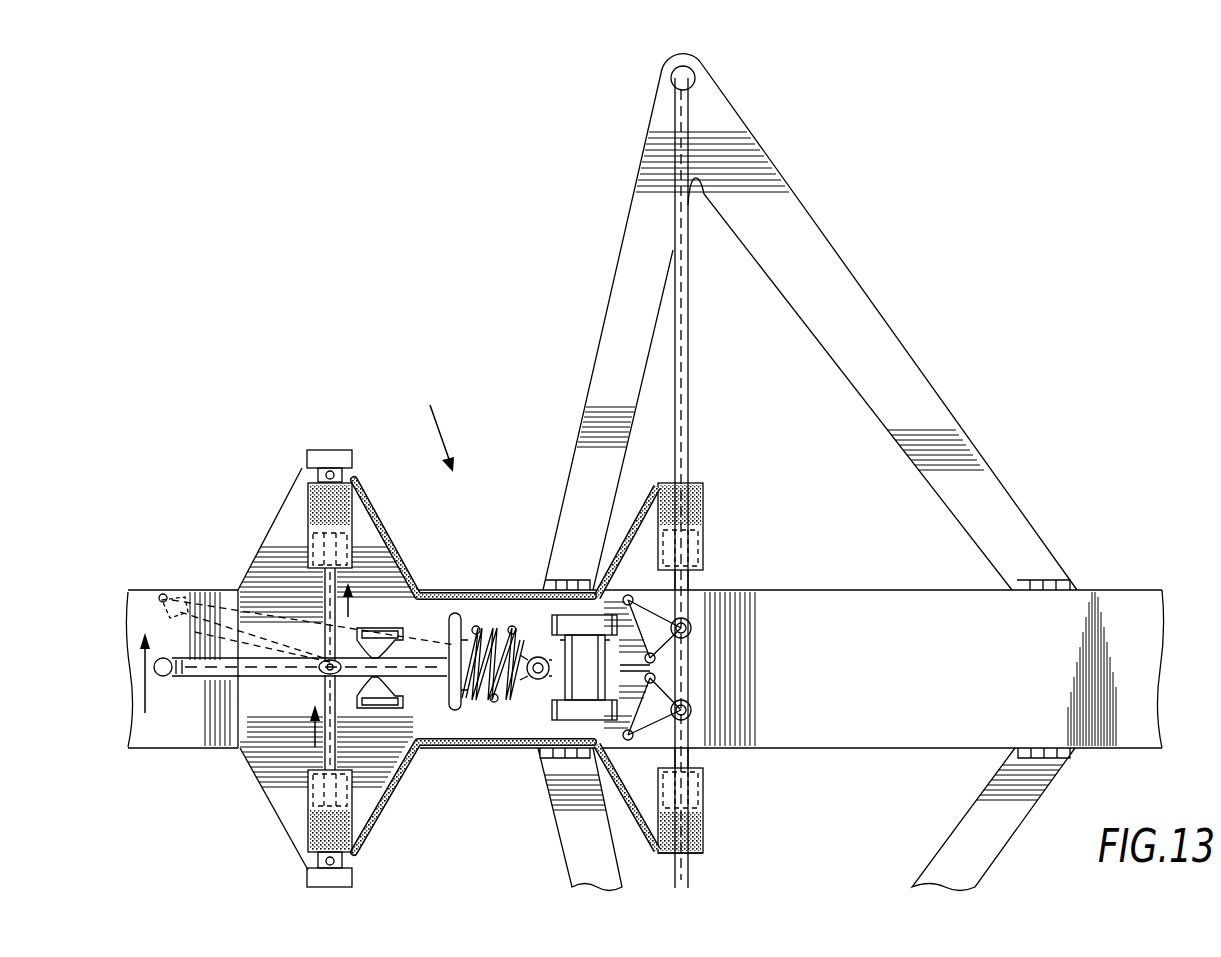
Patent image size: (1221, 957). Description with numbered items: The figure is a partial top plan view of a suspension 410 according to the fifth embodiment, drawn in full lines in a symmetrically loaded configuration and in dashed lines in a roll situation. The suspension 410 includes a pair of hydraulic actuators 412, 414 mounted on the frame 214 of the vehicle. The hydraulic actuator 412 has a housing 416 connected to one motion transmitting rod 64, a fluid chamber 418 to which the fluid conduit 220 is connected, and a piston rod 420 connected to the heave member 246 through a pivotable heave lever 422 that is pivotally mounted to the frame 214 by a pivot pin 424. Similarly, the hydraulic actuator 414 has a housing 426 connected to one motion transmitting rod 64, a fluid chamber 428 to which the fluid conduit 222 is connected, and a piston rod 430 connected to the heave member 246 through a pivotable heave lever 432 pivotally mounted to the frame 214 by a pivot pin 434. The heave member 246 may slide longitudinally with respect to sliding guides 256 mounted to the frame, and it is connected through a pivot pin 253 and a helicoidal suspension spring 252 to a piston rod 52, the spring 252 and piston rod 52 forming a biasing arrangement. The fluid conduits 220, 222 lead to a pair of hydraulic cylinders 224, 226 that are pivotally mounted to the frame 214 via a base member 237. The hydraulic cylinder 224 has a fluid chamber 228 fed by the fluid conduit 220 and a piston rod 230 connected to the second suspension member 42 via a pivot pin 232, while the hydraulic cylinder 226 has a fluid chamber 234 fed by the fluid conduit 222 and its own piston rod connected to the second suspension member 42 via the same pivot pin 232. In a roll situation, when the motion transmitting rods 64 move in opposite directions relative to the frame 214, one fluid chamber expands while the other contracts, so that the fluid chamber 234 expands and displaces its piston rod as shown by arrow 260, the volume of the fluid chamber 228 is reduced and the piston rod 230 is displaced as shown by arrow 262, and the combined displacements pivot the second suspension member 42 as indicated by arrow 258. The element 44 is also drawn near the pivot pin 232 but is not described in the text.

The suspension 410 is at (438, 424).
The frame 214 is at (915, 622).
The motion transmitting rod 64 is at (686, 372).
The fluid chamber 418 is at (690, 488).
The housing 416 is at (705, 500).
The hydraulic actuator 412 is at (706, 518).
The piston rod 420 is at (690, 582).
The pivot pin 424 is at (631, 598).
The pivotable heave lever 422 is at (661, 640).
The heave member 246 is at (655, 668).
The pivotable heave lever 432 is at (663, 700).
The piston rod 430 is at (690, 755).
The hydraulic actuator 414 is at (708, 802).
The fluid chamber 428 is at (705, 835).
The housing 426 is at (705, 848).
The pivot pin 434 is at (613, 780).
The fluid chamber 228 is at (305, 480).
The base member 237 is at (282, 552).
The hydraulic cylinder 224 is at (356, 533).
The fluid conduit 220 is at (462, 594).
The fluid conduit 222 is at (390, 795).
The piston rod 230 is at (324, 608).
The pivot pin 232 is at (324, 682).
The arrow 262 is at (360, 626).
The lower cam follower 44 is at (375, 702).
The piston rod 52 is at (412, 670).
The pivot pin 253 is at (533, 656).
The helicoidal suspension spring 252 is at (497, 690).
The sliding guides 256 is at (578, 718).
The arrow 258 is at (137, 678).
The second suspension member 42 is at (275, 735).
The arrow 260 is at (312, 740).
The hydraulic cylinder 226 is at (310, 792).
The fluid chamber 234 is at (305, 850).